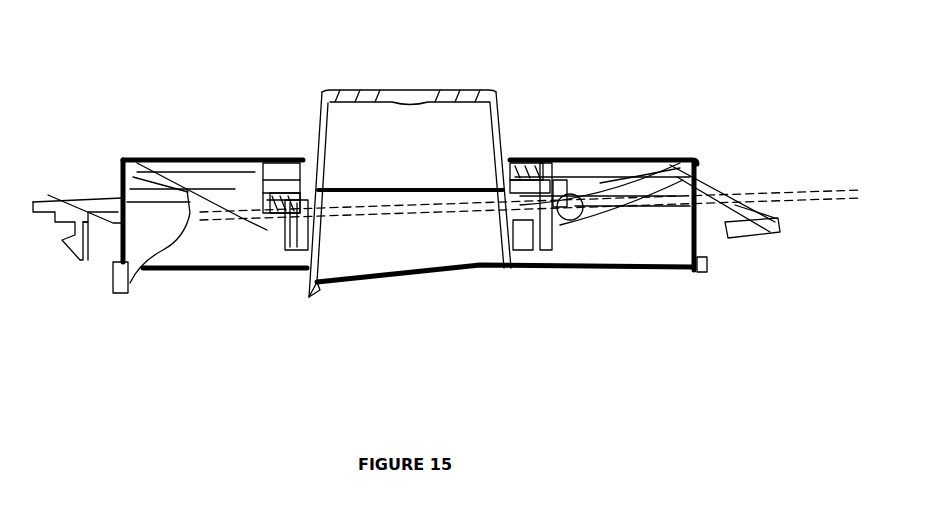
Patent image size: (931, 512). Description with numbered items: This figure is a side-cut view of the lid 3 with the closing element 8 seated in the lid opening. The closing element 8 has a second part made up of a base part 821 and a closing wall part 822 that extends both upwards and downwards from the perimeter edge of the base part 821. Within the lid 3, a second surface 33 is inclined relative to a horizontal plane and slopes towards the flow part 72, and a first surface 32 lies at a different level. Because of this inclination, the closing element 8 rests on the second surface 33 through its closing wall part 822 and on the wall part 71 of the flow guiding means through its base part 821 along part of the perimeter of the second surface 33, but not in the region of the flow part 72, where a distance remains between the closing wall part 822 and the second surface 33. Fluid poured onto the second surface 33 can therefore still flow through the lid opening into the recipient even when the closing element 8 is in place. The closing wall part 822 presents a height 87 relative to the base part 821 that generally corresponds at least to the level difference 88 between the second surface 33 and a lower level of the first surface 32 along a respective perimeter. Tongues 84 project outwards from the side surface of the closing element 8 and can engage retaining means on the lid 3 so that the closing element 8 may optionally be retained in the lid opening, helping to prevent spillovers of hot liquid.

The lid 3 is at (152, 152).
The closing element 8 is at (313, 128).
The first surface 32 is at (122, 292).
The second surface 33 is at (270, 215).
The wall part 71 is at (317, 217).
The flow part 72 is at (323, 280).
The tongues 84 is at (523, 227).
The base part 821 is at (540, 160).
The closing wall part 822 is at (590, 182).
The height 87 is at (797, 190).
The level difference 88 is at (827, 198).